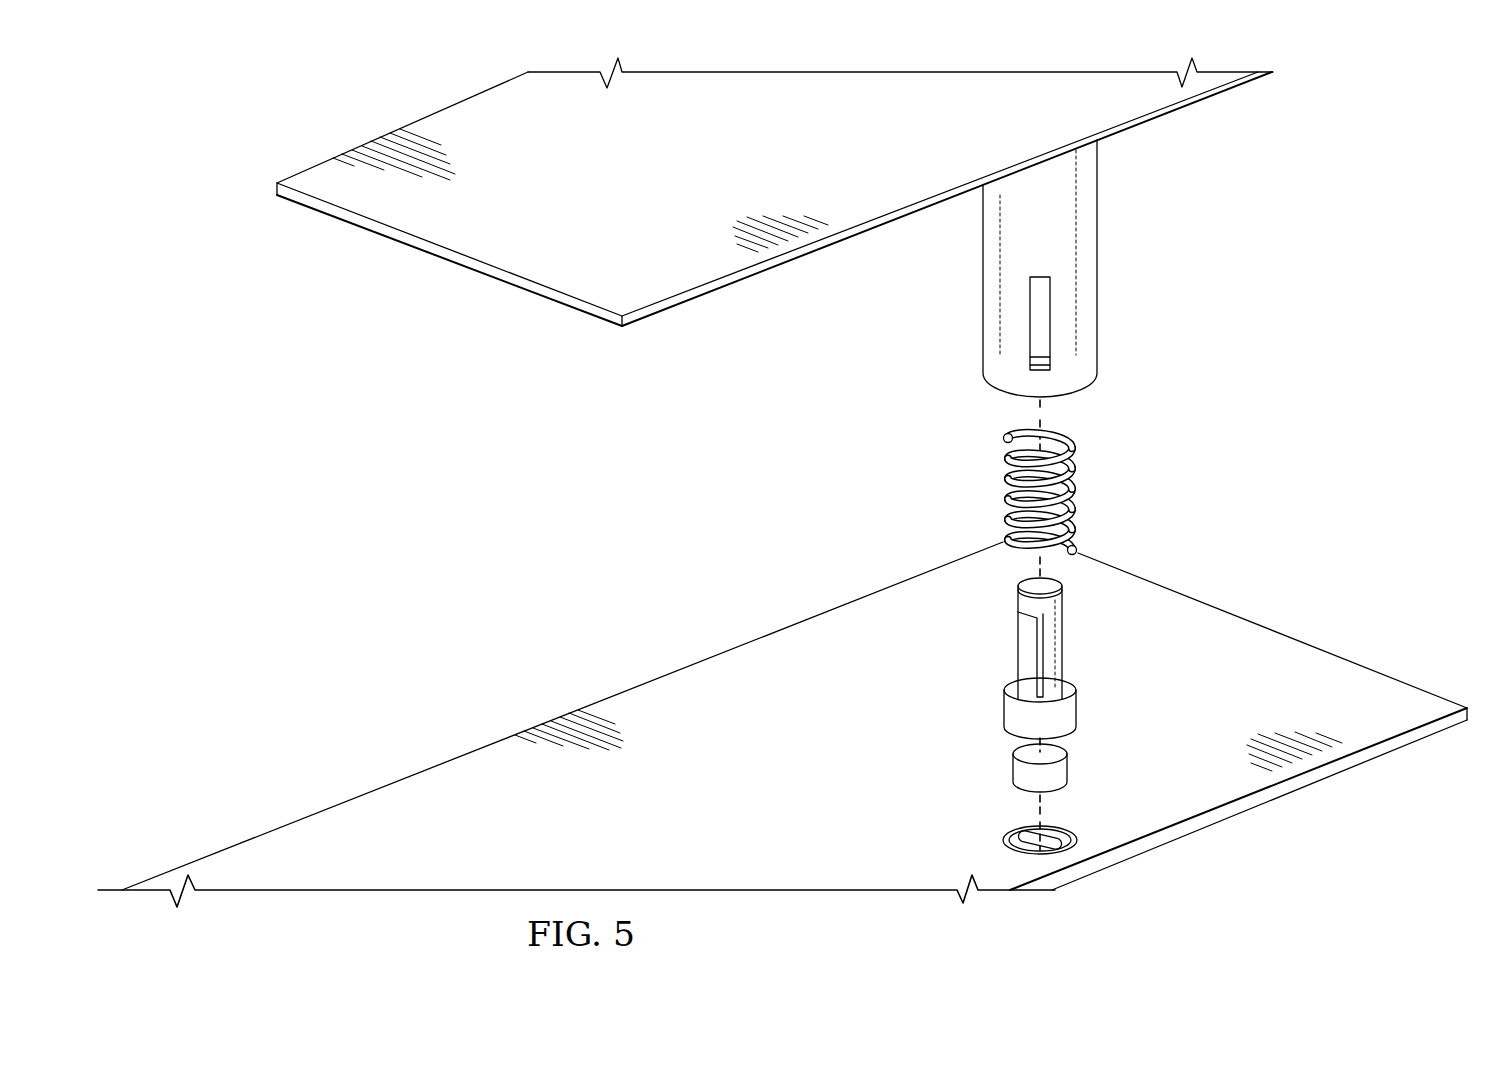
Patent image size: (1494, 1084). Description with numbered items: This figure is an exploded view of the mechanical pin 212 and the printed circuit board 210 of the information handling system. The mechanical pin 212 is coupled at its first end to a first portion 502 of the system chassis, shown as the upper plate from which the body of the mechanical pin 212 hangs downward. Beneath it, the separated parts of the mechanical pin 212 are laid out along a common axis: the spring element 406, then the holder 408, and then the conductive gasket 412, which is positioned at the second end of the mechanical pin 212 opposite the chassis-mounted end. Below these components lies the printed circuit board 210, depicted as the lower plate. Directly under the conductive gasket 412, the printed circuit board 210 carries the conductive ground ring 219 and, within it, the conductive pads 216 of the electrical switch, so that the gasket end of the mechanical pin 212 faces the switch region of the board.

The first portion of chassis 502 is at (404, 116).
The mechanical pin 212 is at (1257, 398).
The spring element 406 is at (1090, 489).
The holder 408 is at (1078, 655).
The conductive gasket 412 is at (1084, 773).
The conductive ground ring 219 is at (993, 836).
The conductive pads 216 is at (1075, 826).
The printed circuit board 210 is at (710, 645).